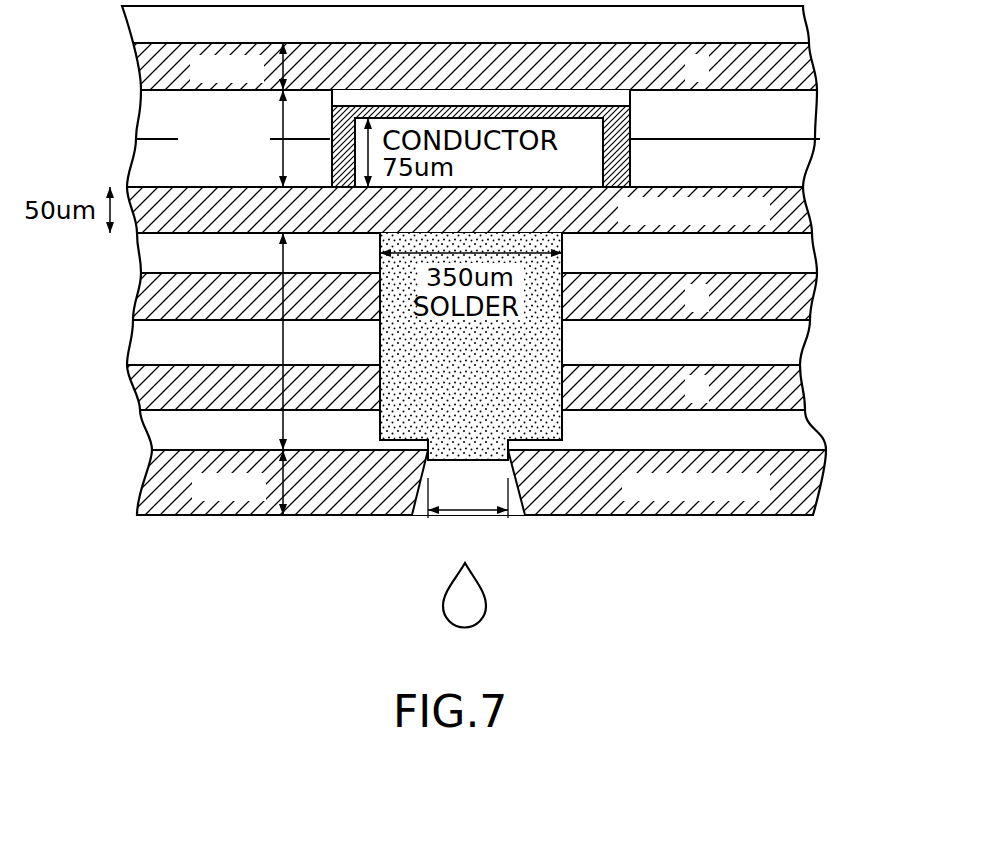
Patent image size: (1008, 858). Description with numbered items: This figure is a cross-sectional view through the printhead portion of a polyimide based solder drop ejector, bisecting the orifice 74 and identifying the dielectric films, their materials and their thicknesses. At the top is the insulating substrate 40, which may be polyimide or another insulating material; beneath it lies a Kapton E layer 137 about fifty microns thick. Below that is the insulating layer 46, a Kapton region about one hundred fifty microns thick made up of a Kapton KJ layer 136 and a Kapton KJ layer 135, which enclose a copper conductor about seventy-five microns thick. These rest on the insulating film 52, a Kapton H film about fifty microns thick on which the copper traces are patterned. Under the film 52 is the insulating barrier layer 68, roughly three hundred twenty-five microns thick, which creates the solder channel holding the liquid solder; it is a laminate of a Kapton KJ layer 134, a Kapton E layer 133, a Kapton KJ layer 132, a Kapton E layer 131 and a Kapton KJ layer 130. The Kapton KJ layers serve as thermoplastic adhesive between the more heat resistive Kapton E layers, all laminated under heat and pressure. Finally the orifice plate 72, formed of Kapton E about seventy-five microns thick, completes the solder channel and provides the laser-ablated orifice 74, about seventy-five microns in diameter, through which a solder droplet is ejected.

The insulating substrate 40 is at (94, 6).
The insulating layer 46 is at (94, 96).
The insulating film 52 is at (808, 215).
The insulating barrier layer 68 is at (88, 233).
The orifice plate 72 is at (148, 484).
The orifice 74 is at (493, 495).
The Kapton KJ layer 130 is at (824, 436).
The Kapton E layer 131 is at (806, 392).
The Kapton KJ layer 132 is at (804, 347).
The Kapton E layer 133 is at (818, 304).
The Kapton KJ layer 134 is at (816, 258).
The Kapton KJ layer 135 is at (804, 165).
The Kapton KJ layer 136 is at (814, 121).
The Kapton E layer 137 is at (818, 72).